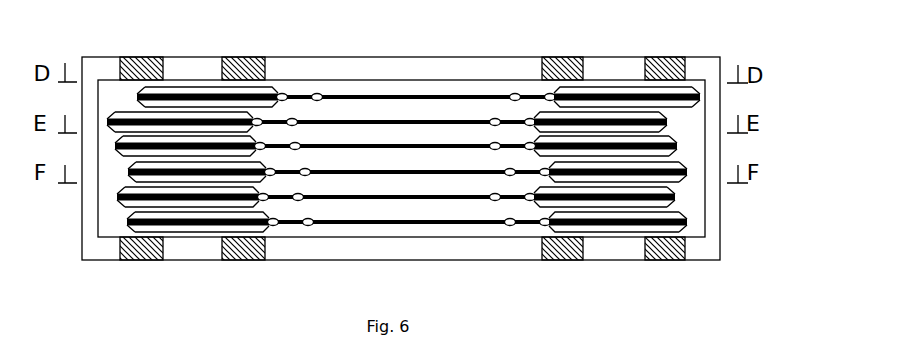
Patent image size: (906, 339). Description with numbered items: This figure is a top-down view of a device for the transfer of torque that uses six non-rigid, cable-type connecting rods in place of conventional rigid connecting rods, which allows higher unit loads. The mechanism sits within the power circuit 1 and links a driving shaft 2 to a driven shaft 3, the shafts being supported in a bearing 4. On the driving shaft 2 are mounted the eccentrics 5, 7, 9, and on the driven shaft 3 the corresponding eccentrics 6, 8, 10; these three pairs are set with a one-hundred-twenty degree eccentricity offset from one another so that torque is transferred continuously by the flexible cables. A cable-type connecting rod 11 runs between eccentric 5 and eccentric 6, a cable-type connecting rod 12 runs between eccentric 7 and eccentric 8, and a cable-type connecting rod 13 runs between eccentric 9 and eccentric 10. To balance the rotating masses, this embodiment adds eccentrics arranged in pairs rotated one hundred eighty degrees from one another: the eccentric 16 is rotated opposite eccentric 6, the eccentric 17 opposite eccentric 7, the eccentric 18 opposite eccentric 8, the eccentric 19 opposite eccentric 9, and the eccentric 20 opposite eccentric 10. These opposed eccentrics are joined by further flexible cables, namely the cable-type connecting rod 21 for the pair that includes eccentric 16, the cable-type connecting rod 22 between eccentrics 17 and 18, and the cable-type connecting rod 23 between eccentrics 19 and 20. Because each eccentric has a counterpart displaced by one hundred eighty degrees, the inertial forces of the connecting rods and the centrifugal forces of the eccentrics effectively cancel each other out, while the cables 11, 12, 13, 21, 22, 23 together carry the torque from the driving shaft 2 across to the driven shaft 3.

The power circuit 1 is at (93, 65).
The driving shaft 2 is at (177, 60).
The driven shaft 3 is at (612, 241).
The bearing 4 is at (668, 142).
The eccentric of the driving shaft 5 is at (140, 58).
The eccentric of the driven shaft 6 is at (600, 85).
The eccentric of the driving shaft 7 is at (130, 162).
The eccentric of the driven shaft 8 is at (665, 162).
The eccentric of the driving shaft 9 is at (128, 214).
The eccentric of the driven shaft 10 is at (687, 216).
The cable-type connecting rod 11 is at (325, 95).
The cable-type connecting rod 12 is at (362, 143).
The cable-type connecting rod 13 is at (395, 195).
The eccentric rotated 180 degrees to eccentric 6 16 is at (615, 105).
The eccentric rotated 180 degrees to eccentric 7 17 is at (128, 188).
The eccentric rotated 180 degrees to eccentric 8 18 is at (672, 187).
The eccentric rotated 180 degrees to eccentric 9 19 is at (120, 238).
The eccentric rotated 180 degrees to eccentric 10 20 is at (690, 240).
The cable-type connecting rod of eccentrics 15 and 16 21 is at (323, 118).
The cable-type connecting rod of eccentrics 17 and 18 22 is at (372, 170).
The cable-type connecting rod of eccentrics 19 and 20 23 is at (442, 218).